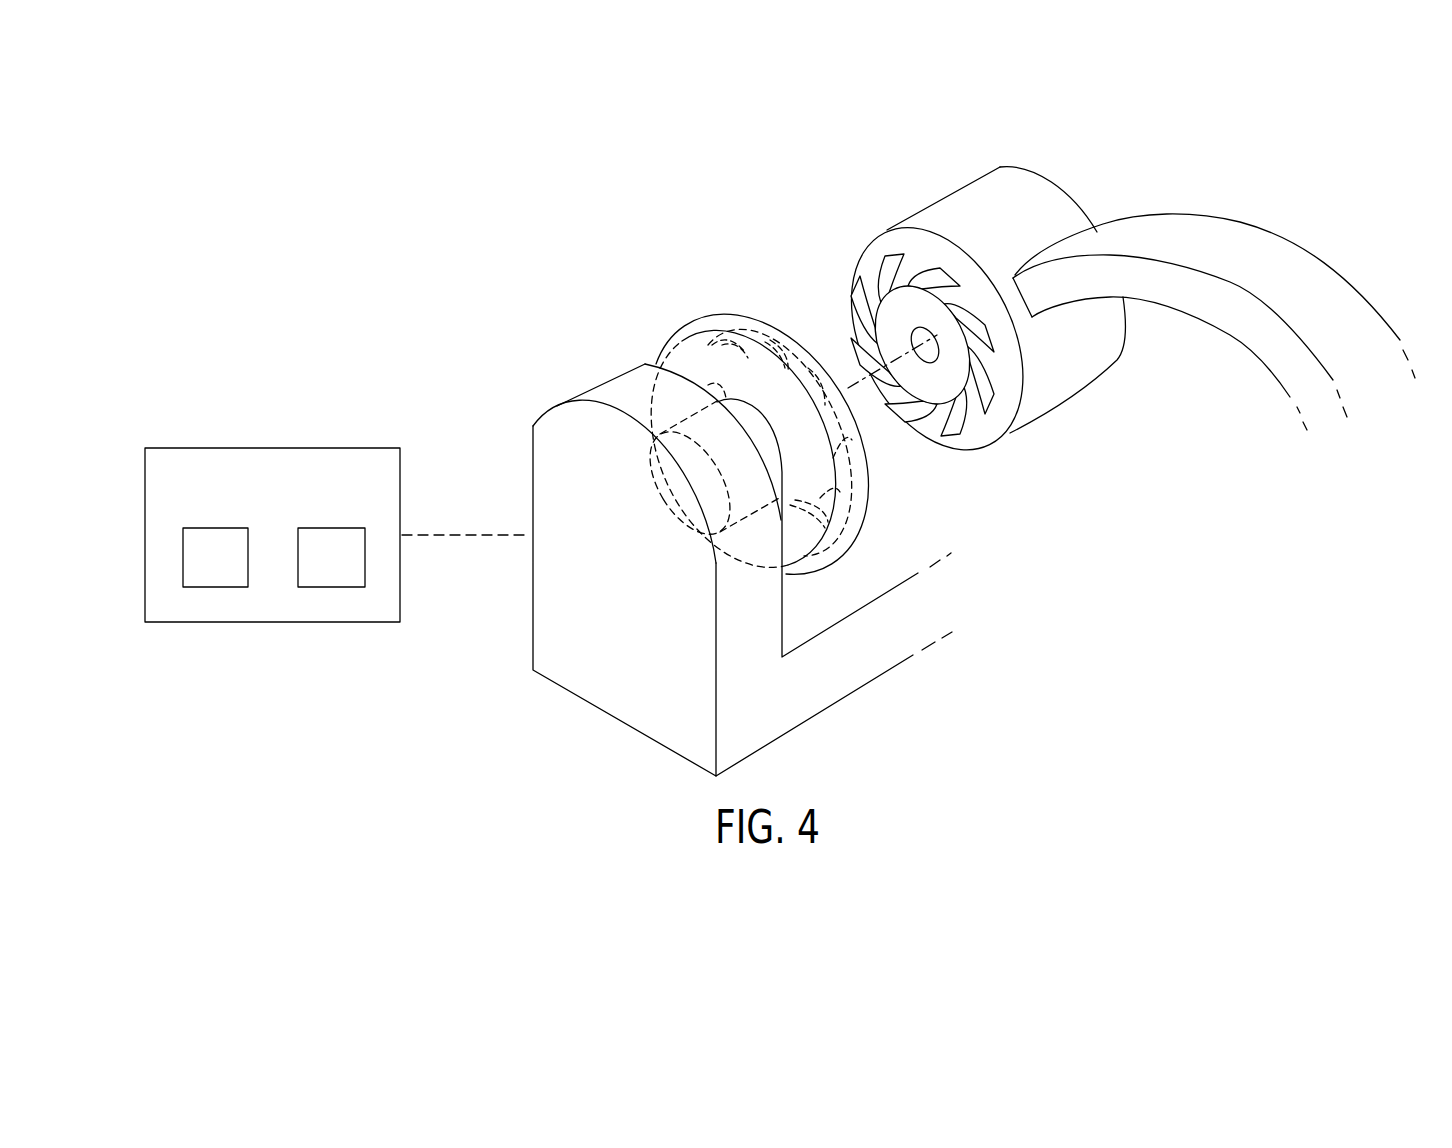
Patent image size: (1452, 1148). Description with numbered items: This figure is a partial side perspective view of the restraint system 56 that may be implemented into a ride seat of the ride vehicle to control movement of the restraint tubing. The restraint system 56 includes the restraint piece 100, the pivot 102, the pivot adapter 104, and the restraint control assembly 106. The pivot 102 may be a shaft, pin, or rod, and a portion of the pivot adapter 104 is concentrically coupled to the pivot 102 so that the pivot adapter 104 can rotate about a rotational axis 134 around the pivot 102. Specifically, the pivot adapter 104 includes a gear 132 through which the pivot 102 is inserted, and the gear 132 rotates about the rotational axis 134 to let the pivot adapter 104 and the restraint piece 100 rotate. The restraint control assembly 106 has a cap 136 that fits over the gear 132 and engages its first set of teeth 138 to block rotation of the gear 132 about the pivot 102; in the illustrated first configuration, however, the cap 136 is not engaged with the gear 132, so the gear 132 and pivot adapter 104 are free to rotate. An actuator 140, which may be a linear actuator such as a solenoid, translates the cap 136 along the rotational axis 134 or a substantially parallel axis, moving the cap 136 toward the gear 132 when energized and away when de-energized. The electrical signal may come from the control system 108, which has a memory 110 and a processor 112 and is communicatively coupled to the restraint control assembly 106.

The restraint system 56 is at (1395, 212).
The restraint piece 100 is at (1297, 367).
The pivot 102 is at (903, 327).
The pivot adapter 104 is at (1030, 220).
The restraint control assembly 106 is at (570, 224).
The control system 108 is at (268, 519).
The memory 110 is at (217, 590).
The processor 112 is at (333, 590).
The gear 132 is at (922, 392).
The rotational axis 134 is at (870, 368).
The cap 136 is at (862, 508).
The first set of teeth 138 is at (897, 252).
The actuator 140 is at (608, 390).